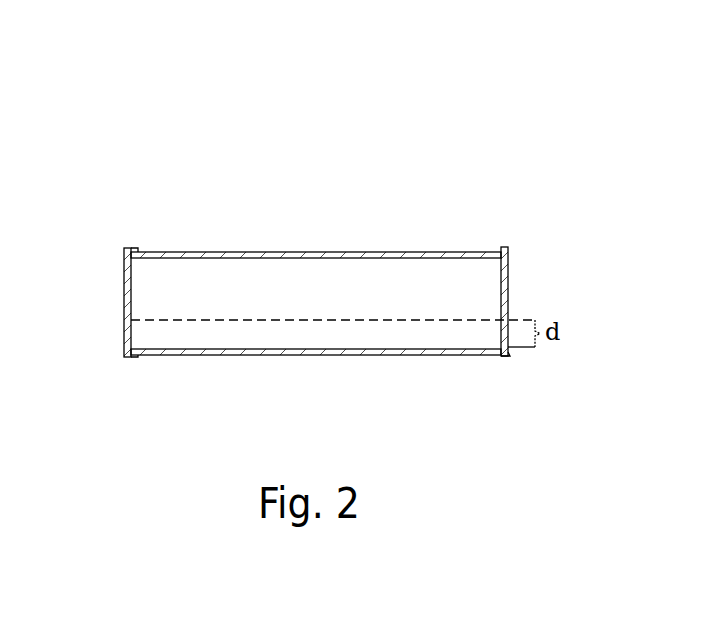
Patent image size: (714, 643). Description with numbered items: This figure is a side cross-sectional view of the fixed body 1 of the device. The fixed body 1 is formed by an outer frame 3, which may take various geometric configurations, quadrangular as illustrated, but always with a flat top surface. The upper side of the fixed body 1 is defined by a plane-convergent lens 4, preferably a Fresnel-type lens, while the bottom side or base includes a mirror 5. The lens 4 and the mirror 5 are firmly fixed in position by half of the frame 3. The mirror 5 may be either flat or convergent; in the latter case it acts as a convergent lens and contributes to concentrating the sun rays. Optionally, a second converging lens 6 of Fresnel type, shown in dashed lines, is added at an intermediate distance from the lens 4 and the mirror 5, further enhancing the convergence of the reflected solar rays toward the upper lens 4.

The fixed body 1 is at (307, 213).
The outer frame 3 is at (123, 305).
The plane-convergent lens 4 is at (185, 250).
The mirror 5 is at (435, 353).
The second converging lens 6 is at (468, 315).